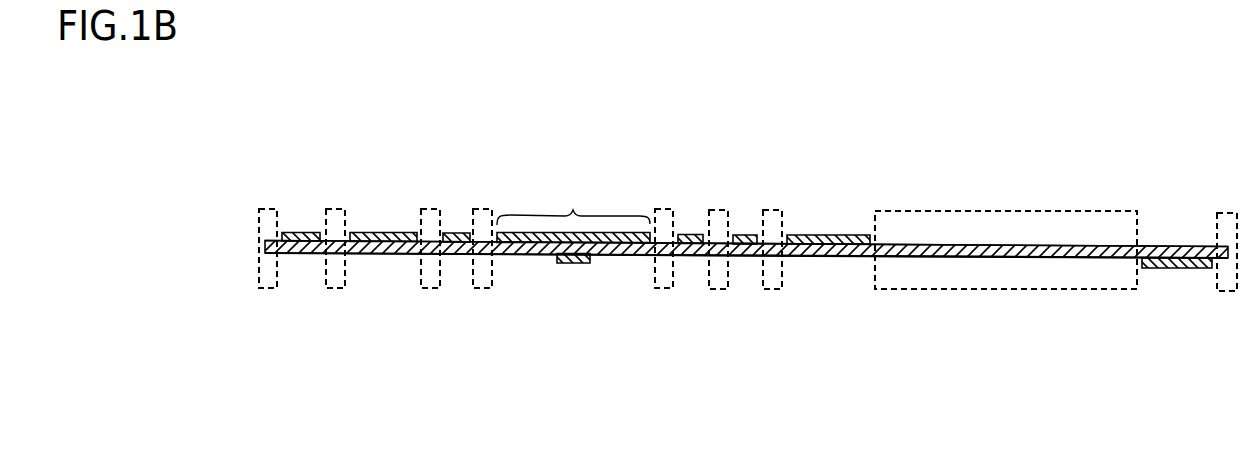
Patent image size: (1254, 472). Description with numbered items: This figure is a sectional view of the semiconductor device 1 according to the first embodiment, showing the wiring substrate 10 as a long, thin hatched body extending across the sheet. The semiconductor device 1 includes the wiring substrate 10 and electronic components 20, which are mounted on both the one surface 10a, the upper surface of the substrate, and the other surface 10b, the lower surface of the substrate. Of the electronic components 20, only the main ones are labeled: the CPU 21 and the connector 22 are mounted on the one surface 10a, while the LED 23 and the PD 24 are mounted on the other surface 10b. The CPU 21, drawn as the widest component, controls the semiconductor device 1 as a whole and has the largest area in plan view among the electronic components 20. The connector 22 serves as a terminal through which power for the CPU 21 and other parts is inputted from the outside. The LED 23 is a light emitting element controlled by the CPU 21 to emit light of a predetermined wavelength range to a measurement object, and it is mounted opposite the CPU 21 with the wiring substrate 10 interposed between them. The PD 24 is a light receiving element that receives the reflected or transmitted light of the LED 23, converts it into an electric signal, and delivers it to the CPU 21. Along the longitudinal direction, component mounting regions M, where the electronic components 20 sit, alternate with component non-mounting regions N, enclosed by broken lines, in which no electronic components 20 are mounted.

The semiconductor device 1 is at (203, 106).
The wiring substrate 10 is at (1195, 250).
The one surface 10a is at (297, 233).
The other surface 10b is at (297, 253).
The electronic components 20 is at (379, 226).
The CPU 21 is at (517, 243).
The connector 22 is at (825, 236).
The LED 23 is at (570, 263).
The PD 24 is at (1175, 268).
The component mounting regions M is at (573, 210).
The component non-mounting regions N is at (662, 208).